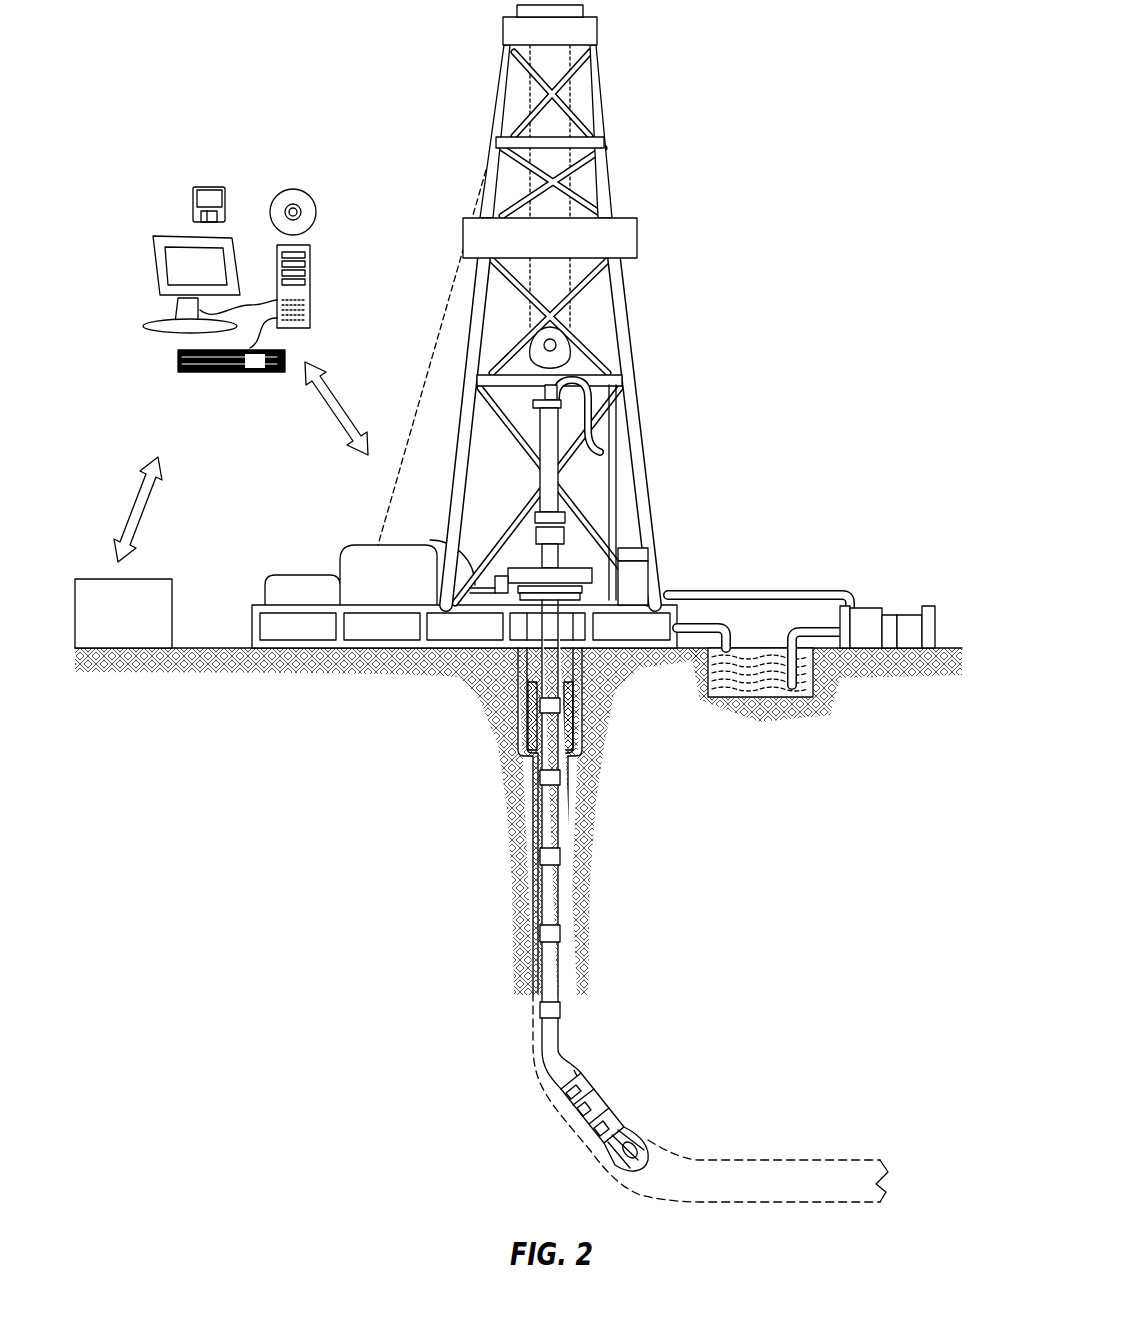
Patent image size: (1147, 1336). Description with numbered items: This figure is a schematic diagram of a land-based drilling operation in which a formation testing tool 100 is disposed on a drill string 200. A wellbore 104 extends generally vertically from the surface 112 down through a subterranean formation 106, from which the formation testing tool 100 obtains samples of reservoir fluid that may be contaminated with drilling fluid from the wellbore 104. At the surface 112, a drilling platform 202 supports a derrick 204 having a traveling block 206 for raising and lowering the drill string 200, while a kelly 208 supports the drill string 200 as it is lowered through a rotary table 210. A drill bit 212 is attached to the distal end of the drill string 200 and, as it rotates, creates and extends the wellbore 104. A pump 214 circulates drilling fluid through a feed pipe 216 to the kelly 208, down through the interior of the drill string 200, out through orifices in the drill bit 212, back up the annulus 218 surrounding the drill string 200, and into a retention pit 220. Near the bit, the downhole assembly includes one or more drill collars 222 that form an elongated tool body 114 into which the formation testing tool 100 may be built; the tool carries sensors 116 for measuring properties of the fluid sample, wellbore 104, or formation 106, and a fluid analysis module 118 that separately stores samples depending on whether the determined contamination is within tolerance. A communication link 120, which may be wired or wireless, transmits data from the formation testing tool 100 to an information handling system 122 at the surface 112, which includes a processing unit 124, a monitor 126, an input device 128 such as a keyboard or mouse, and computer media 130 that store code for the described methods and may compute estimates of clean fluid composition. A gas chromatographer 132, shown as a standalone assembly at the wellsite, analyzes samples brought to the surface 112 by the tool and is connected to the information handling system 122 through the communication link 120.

The formation testing tool 100 is at (598, 891).
The wellbore 104 is at (568, 850).
The subterranean formation 106 is at (795, 948).
The surface 112 is at (945, 648).
The tool body 114 is at (588, 1106).
The sensors 116 is at (600, 1145).
The fluid analysis module 118 is at (578, 1112).
The communication link 120 is at (325, 412).
The information handling system 122 is at (226, 285).
The processing unit 124 is at (313, 262).
The monitor 126 is at (157, 277).
The input device 128 is at (195, 376).
The computer media 130 is at (290, 185).
The gas chromatographer 132 is at (144, 627).
The drill string 200 is at (560, 833).
The drilling platform 202 is at (252, 629).
The derrick 204 is at (608, 160).
The traveling block 206 is at (582, 348).
The kelly 208 is at (555, 430).
The rotary table 210 is at (588, 568).
The drill bit 212 is at (650, 1140).
The pump 214 is at (866, 607).
The feed pipe 216 is at (785, 590).
The annulus 218 is at (533, 853).
The retention pit 220 is at (757, 688).
The drill collars 222 is at (596, 1113).